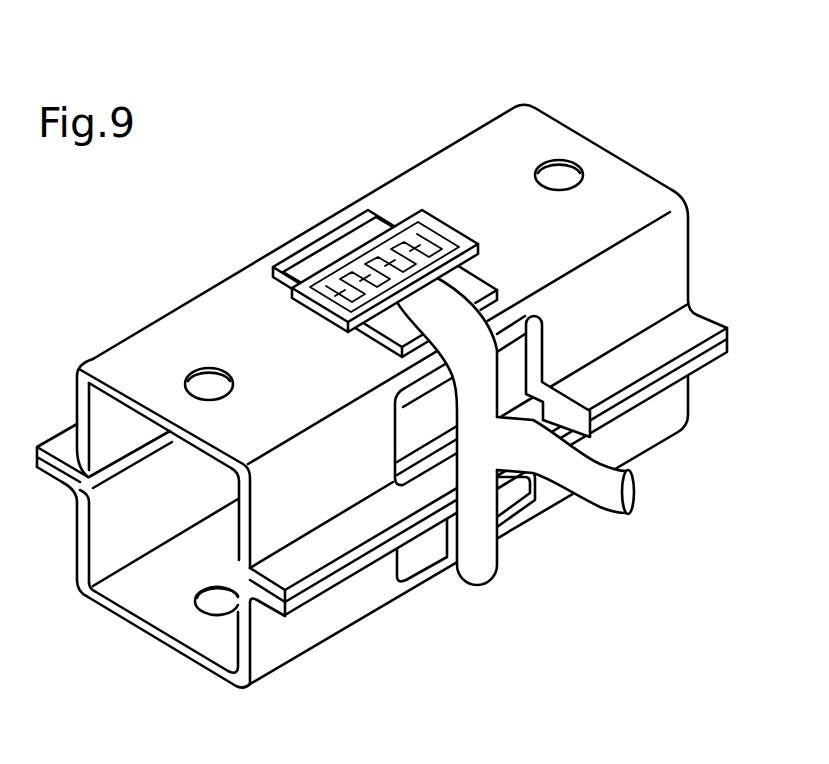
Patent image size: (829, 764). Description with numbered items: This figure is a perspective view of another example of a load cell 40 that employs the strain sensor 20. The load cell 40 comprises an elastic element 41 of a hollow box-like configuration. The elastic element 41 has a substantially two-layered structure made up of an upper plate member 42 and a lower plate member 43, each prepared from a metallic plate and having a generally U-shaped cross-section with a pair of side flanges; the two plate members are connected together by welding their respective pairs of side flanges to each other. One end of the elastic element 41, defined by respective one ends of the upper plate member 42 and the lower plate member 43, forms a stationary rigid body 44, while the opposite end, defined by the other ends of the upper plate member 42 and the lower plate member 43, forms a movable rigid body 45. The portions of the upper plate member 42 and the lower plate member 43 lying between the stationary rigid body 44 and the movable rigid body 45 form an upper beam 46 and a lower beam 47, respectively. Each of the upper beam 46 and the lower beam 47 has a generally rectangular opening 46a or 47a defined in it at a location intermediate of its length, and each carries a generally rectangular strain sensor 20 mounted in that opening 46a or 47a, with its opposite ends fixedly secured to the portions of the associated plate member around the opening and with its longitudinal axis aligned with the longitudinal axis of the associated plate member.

The load cell 40 is at (382, 370).
The elastic element 41 is at (560, 115).
The upper plate member 42 is at (153, 378).
The lower plate member 43 is at (143, 637).
The stationary rigid body 44 is at (317, 650).
The movable rigid body 45 is at (647, 450).
The upper beam 46 is at (366, 244).
The rectangular opening 46a is at (358, 243).
The strain sensor 20 is at (447, 223).
The lower beam 47 is at (496, 483).
The rectangular opening 47a is at (402, 552).